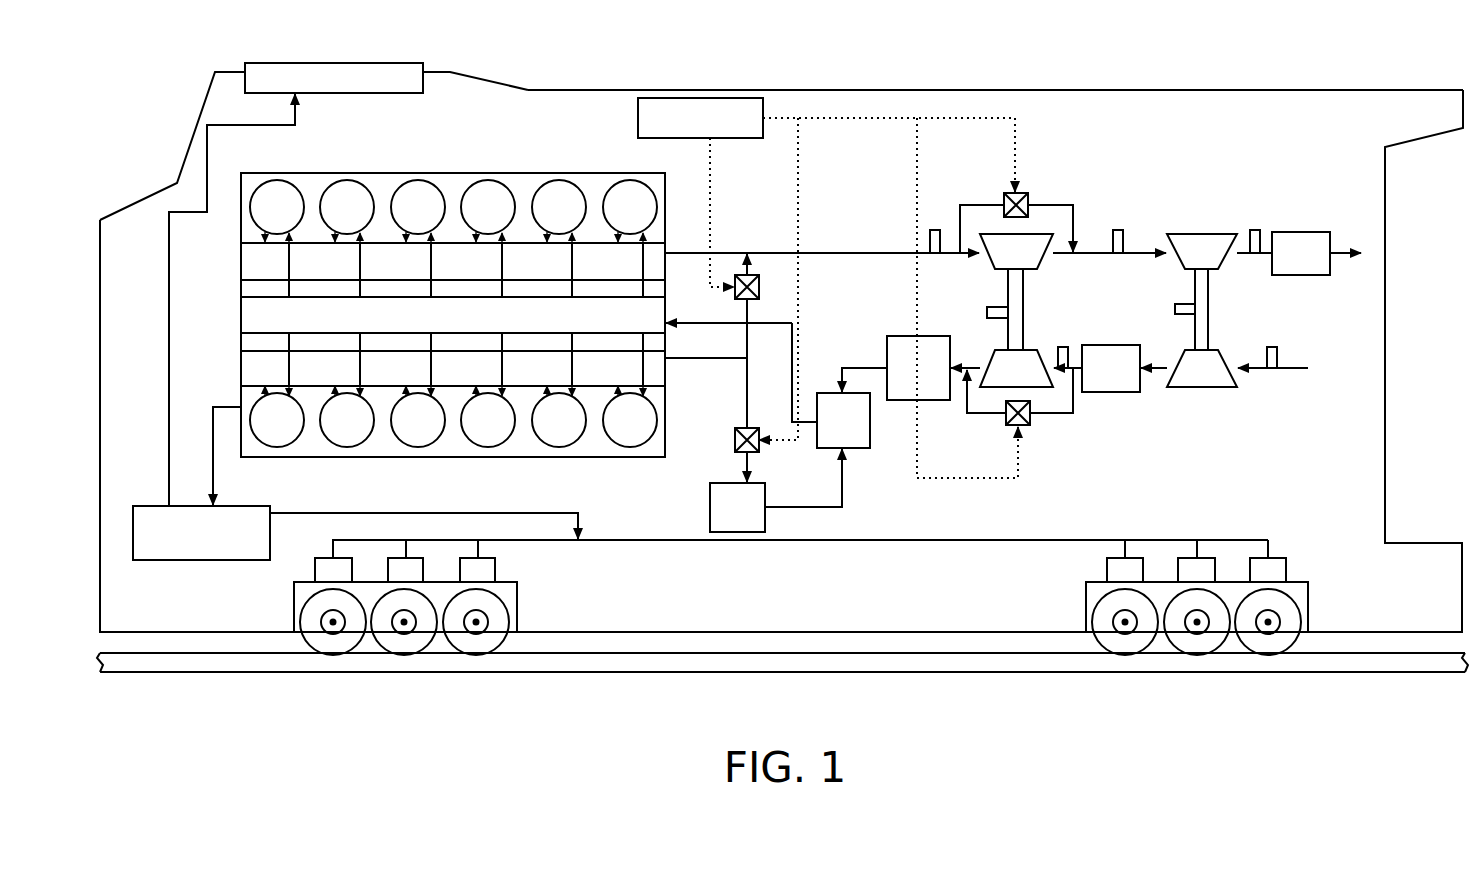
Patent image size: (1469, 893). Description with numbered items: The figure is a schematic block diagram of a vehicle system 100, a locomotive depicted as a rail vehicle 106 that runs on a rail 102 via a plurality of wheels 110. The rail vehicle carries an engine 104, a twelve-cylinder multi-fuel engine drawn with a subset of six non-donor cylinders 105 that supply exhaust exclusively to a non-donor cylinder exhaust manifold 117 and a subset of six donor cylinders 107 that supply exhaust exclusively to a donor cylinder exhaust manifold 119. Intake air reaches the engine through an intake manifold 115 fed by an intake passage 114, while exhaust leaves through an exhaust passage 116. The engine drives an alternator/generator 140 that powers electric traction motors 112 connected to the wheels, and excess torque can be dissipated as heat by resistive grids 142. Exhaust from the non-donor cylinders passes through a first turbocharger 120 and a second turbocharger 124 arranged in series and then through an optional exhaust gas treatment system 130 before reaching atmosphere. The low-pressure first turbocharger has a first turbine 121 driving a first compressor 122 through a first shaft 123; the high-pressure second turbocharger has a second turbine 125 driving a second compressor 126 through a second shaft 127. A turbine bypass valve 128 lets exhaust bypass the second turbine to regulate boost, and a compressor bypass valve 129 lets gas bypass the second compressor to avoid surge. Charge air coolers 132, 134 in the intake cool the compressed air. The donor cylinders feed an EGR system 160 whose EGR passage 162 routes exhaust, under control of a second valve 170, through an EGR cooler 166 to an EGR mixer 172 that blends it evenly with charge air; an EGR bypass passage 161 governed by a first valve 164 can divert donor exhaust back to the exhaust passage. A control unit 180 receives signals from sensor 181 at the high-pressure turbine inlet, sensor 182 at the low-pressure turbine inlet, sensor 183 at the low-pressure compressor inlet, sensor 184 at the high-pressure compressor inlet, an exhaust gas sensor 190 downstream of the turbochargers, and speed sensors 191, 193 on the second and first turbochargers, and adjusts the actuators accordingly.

The vehicle system 100 is at (781, 326).
The rail 102 is at (1382, 672).
The engine 104 is at (426, 306).
The non-donor cylinders 105 is at (420, 180).
The rail vehicle 106 is at (1125, 90).
The donor cylinders 107 is at (418, 447).
The wheels 110 is at (500, 612).
The electric traction motors 112 is at (497, 575).
The intake passage 114 is at (1255, 372).
The intake manifold 115 is at (435, 327).
The exhaust passage 116 is at (840, 253).
The non-donor cylinder exhaust manifold 117 is at (240, 262).
The donor cylinder exhaust manifold 119 is at (240, 370).
The first turbocharger 120 is at (1210, 339).
The first turbine 121 is at (1184, 263).
The first compressor 122 is at (1184, 379).
The first shaft 123 is at (1210, 330).
The second turbocharger 124 is at (1040, 317).
The second turbine 125 is at (1000, 263).
The second compressor 126 is at (1000, 379).
The second shaft 127 is at (1025, 330).
The turbine bypass valve 128 is at (1030, 197).
The compressor bypass valve 129 is at (1006, 420).
The exhaust gas treatment system 130 is at (1283, 264).
The charge air cooler 132 is at (1093, 379).
The charge air cooler 134 is at (900, 379).
The alternator/generator 140 is at (184, 544).
The resistive grids 142 is at (415, 62).
The EGR system 160 is at (822, 392).
The EGR bypass passage 161 is at (752, 340).
The EGR passage 162 is at (749, 385).
The first valve 164 is at (757, 280).
The EGR cooler 166 is at (719, 518).
The second valve 170 is at (762, 452).
The EGR mixer 172 is at (825, 431).
The control unit 180 is at (682, 129).
The sensor 181 is at (935, 229).
The sensor 182 is at (1118, 229).
The sensor 183 is at (1272, 347).
The sensor 184 is at (1063, 347).
The exhaust gas sensor 190 is at (1258, 229).
The speed sensor 191 is at (987, 311).
The speed sensor 193 is at (1175, 308).